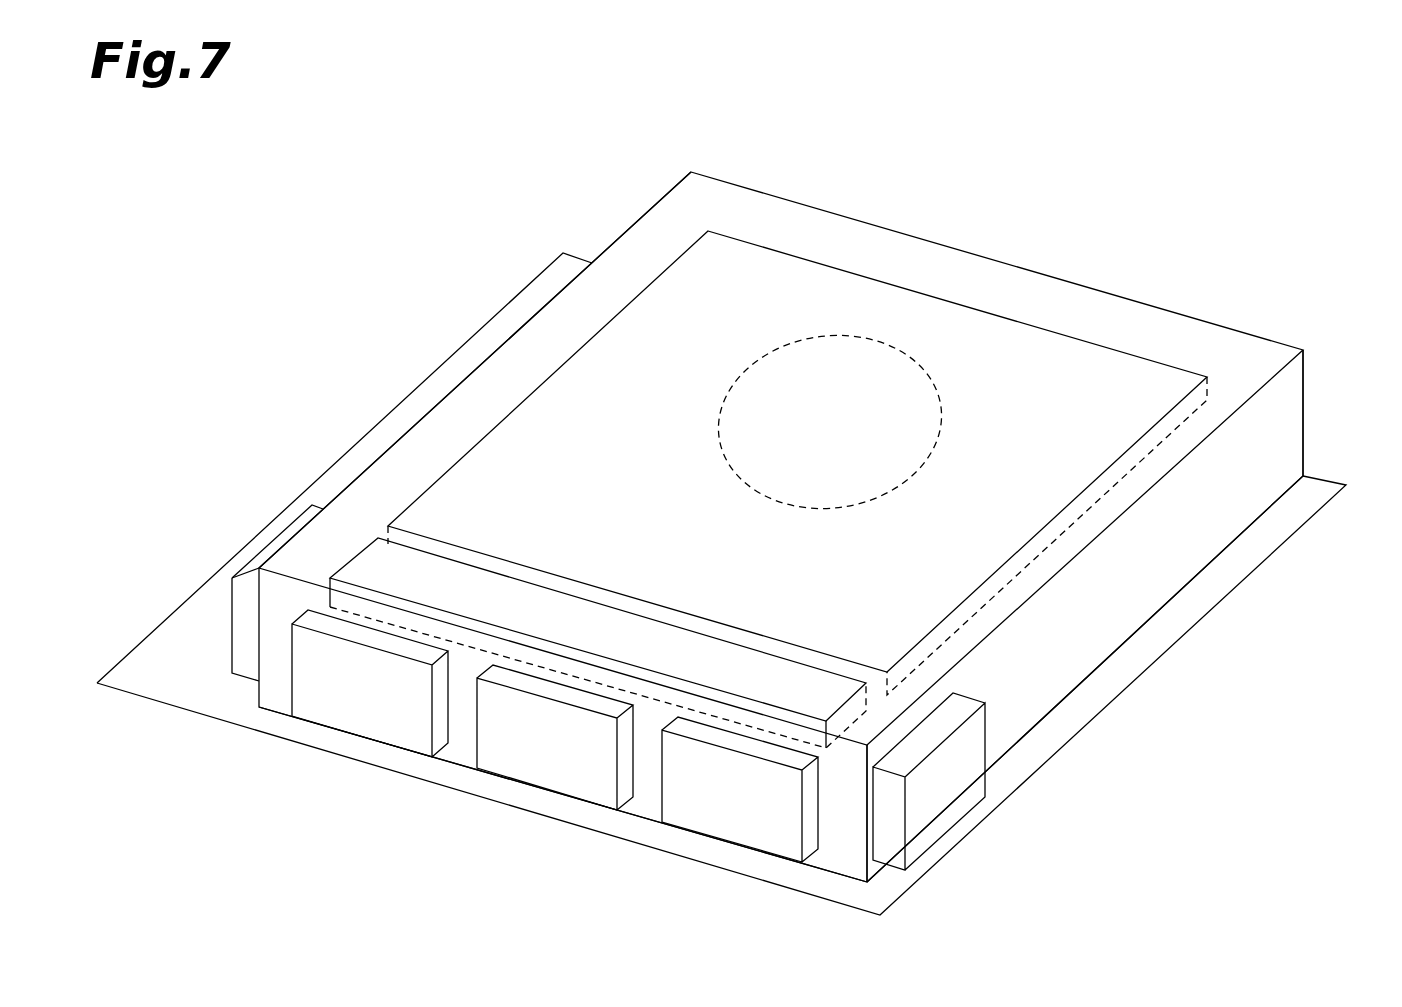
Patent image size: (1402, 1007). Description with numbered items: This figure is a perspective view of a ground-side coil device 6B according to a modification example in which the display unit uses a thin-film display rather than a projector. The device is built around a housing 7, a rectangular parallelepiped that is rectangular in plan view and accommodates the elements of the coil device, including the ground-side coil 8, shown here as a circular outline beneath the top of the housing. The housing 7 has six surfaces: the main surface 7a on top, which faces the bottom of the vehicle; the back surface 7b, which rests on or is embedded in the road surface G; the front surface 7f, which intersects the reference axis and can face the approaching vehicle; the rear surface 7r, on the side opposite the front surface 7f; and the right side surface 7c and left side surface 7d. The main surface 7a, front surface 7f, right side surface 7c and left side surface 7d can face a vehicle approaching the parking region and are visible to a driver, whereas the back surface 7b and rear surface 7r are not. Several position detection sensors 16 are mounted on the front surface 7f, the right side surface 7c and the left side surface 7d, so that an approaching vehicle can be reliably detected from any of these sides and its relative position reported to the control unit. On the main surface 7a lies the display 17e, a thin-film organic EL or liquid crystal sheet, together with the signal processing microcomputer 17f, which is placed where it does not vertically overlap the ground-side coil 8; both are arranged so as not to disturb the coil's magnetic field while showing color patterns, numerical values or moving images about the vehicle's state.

The ground-side coil device 6B is at (332, 147).
The housing 7 is at (826, 210).
The main surface 7a is at (458, 410).
The back surface 7b is at (1000, 760).
The right side surface 7c is at (1067, 667).
The left side surface 7d is at (240, 620).
The front surface 7f is at (848, 858).
The rear surface 7r is at (1290, 415).
The ground-side coil 8 is at (850, 336).
The position detection sensor 16 is at (228, 637).
The display 17e is at (1123, 370).
The signal processing microcomputer 17f is at (368, 565).
The road surface G is at (1318, 485).